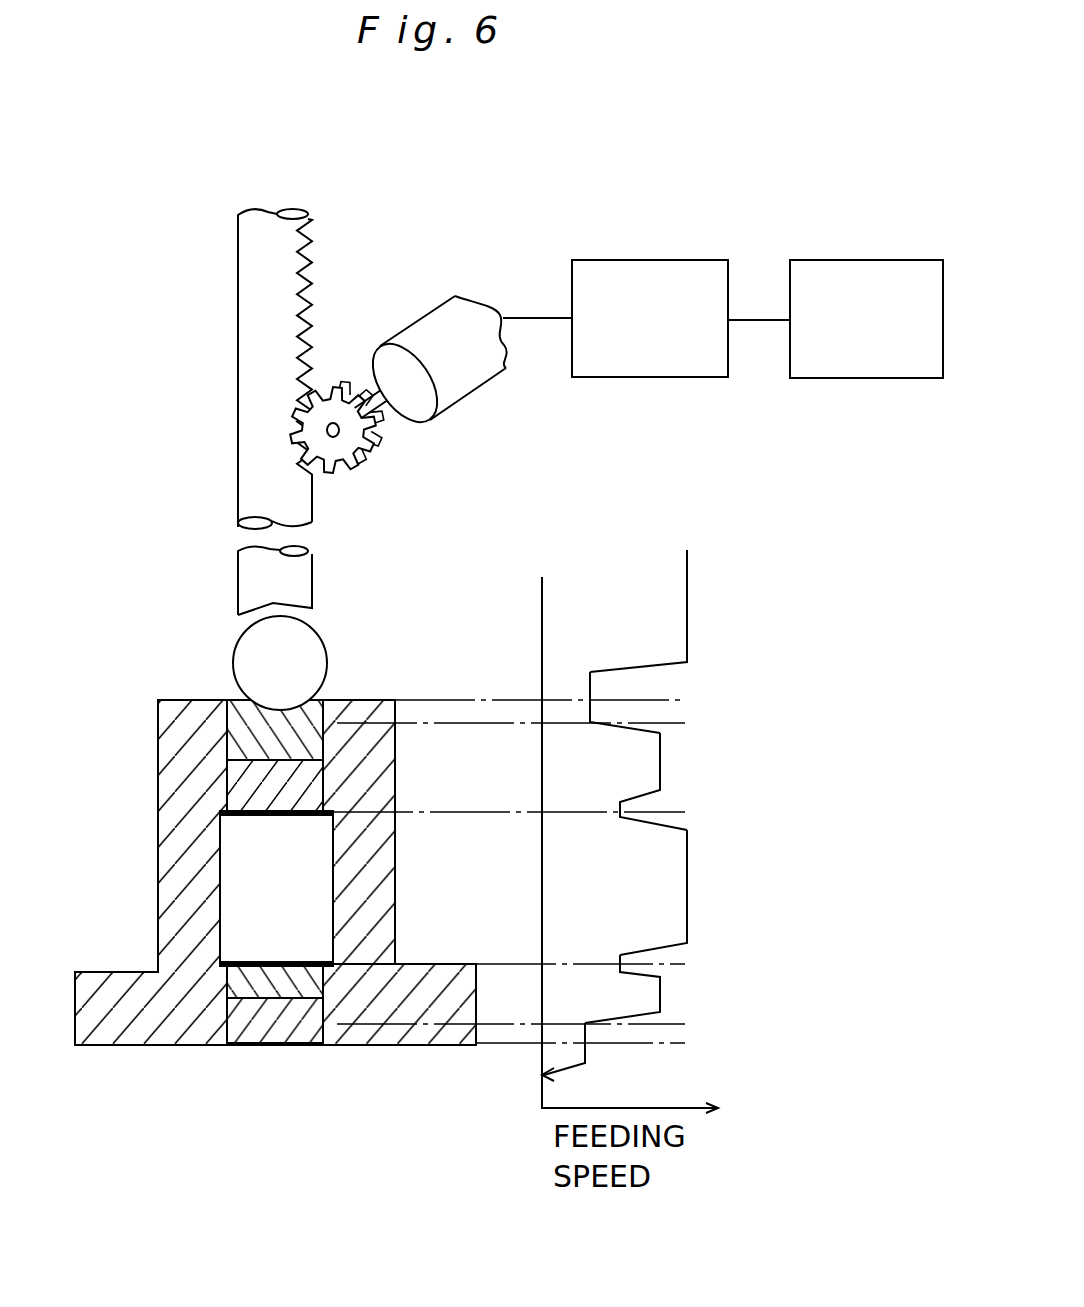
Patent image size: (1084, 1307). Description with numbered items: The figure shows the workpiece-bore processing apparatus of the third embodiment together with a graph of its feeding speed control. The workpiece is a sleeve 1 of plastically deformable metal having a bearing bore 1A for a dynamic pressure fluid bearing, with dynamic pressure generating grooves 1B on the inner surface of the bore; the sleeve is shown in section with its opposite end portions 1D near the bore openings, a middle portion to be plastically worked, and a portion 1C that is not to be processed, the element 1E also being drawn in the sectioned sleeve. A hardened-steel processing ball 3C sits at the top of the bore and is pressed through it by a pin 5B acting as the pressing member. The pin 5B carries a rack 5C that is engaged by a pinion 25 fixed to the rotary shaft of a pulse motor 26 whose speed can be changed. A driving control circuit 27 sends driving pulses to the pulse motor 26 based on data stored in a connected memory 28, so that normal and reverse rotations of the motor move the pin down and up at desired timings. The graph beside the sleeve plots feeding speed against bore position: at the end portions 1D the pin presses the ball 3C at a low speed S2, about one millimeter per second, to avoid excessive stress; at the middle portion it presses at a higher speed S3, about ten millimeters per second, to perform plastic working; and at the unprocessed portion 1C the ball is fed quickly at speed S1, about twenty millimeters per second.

The sleeve 1 is at (178, 736).
The bearing bore 1A is at (227, 777).
The dynamic pressure generating grooves 1B is at (237, 822).
The portion not to be processed 1C is at (242, 907).
The end portions 1D is at (225, 705).
The spacer 1E is at (223, 803).
The processing ball 3C is at (308, 662).
The pin 5B is at (345, 568).
The rack 5C is at (288, 349).
The pinion 25 is at (355, 452).
The pulse motor 26 is at (460, 373).
The driving control circuit 27 is at (668, 378).
The memory 28 is at (866, 378).
The speed S1 is at (686, 612).
The speed S2 is at (592, 686).
The speed S3 is at (662, 757).